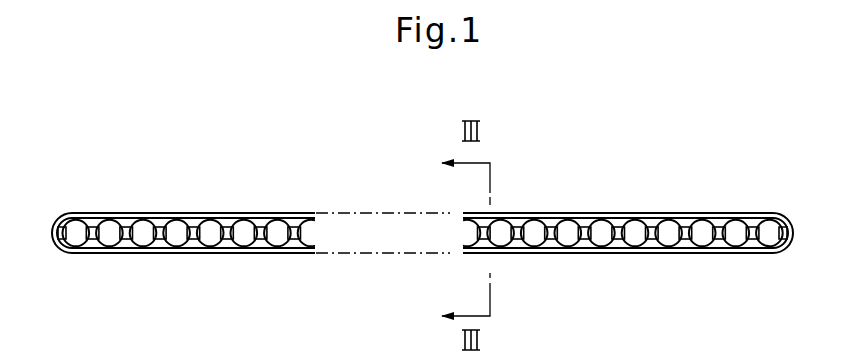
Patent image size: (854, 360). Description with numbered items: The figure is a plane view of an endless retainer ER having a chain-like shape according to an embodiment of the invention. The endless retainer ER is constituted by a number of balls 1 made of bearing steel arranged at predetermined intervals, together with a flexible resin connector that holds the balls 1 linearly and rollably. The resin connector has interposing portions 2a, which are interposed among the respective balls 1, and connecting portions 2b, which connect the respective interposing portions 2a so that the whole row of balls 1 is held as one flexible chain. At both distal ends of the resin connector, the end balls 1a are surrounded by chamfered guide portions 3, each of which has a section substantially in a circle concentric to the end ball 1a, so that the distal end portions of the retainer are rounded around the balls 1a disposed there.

The ball 1 is at (247, 256).
The ball 1a is at (74, 230).
The interposing portion 2a is at (290, 220).
The connecting portion 2b is at (226, 218).
The chamfered guide portion 3 is at (60, 214).
The endless retainer ER is at (522, 200).